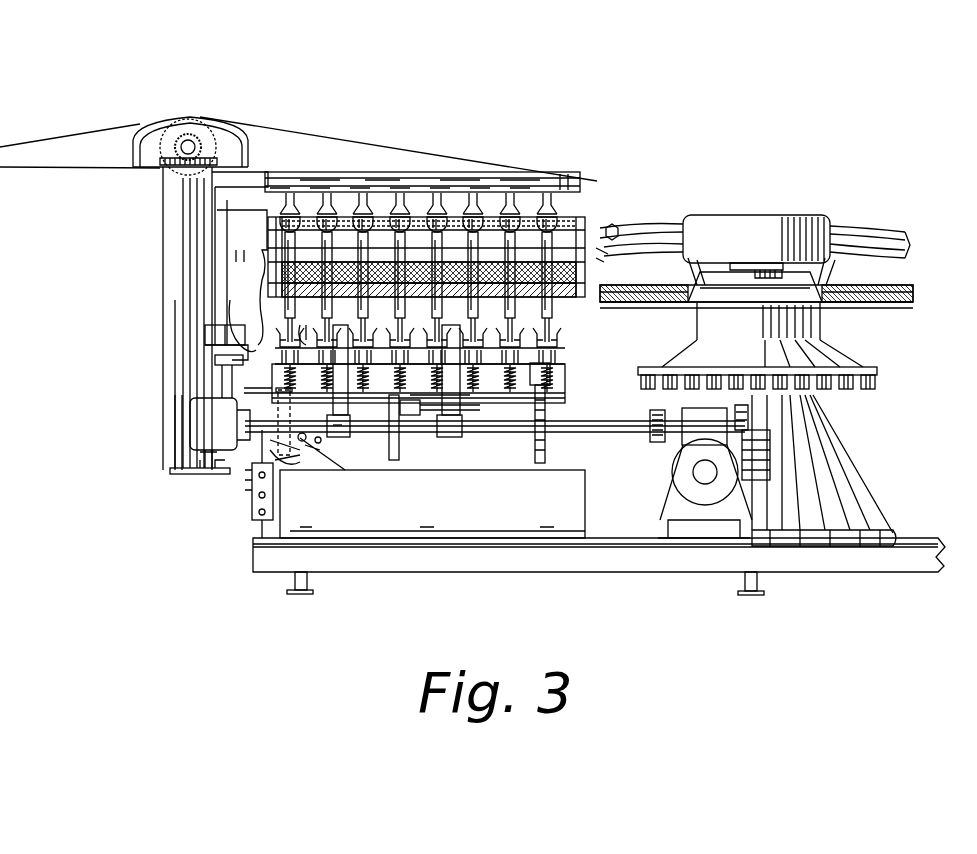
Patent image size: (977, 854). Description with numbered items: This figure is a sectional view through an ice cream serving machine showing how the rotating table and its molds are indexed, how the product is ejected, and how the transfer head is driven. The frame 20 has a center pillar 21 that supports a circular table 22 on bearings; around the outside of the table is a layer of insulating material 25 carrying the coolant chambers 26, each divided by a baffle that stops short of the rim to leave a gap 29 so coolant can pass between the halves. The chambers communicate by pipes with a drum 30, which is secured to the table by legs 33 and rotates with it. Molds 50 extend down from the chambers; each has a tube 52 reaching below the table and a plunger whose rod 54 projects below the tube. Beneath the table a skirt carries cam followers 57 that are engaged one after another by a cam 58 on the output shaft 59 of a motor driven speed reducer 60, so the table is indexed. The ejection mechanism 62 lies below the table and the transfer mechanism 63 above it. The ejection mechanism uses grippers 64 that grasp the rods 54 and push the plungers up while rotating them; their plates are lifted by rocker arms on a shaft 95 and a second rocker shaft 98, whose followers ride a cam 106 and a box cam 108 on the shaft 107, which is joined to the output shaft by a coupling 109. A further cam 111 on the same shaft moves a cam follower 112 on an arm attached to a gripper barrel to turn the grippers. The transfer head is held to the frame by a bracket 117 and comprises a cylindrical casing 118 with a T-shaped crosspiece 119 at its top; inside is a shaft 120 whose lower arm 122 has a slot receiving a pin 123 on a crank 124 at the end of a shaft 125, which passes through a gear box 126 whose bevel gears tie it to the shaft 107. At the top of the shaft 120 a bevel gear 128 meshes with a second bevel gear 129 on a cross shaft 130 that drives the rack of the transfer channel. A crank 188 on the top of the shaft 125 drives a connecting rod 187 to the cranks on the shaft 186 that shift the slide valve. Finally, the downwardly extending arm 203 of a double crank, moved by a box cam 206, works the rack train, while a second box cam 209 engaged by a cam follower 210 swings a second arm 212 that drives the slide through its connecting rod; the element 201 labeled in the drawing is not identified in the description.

The frame 20 is at (244, 557).
The center pillar 21 is at (840, 465).
The circular table 22 is at (916, 314).
The insulating material 25 is at (605, 255).
The coolant chambers 26 is at (618, 226).
The gap 29 is at (268, 229).
The drum 30 is at (762, 214).
The legs 33 is at (905, 276).
The molds 50 is at (482, 218).
The tube 52 is at (553, 313).
The rod 54 is at (552, 340).
The cam followers 57 is at (876, 388).
The cam 58 is at (748, 480).
The output shaft 59 is at (738, 415).
The motor driven speed reducer 60 is at (705, 473).
The ejection mechanism 62 is at (580, 378).
The transfer mechanism 63 is at (374, 143).
The grippers 64 is at (575, 355).
The shaft 95 is at (455, 410).
The second rocker shaft 98 is at (352, 428).
The cam 106 is at (400, 442).
The shaft 107 is at (614, 435).
The box cam 108 is at (395, 460).
The coupling 109 is at (663, 410).
The cam 111 is at (537, 463).
The cam follower 112 is at (552, 393).
The bracket 117 is at (241, 308).
The cylindrical casing 118 is at (162, 285).
The crosspiece 119 is at (303, 161).
The shaft 120 is at (174, 425).
The arm 122 is at (172, 473).
The pin 123 is at (222, 475).
The crank 124 is at (205, 472).
The shaft 125 is at (204, 456).
The gear box 126 is at (220, 424).
The bevel gear 128 is at (150, 158).
The second bevel gear 129 is at (196, 142).
The cross shaft 130 is at (188, 134).
The shaft 186 is at (215, 330).
The connecting rod 187 is at (225, 395).
The crank 188 is at (215, 384).
The rails 201 is at (272, 392).
The downwardly extending arm 203 is at (250, 498).
The box cam 206 is at (290, 470).
The second box cam 209 is at (290, 458).
The cam follower 210 is at (307, 328).
The second arm 212 is at (320, 447).